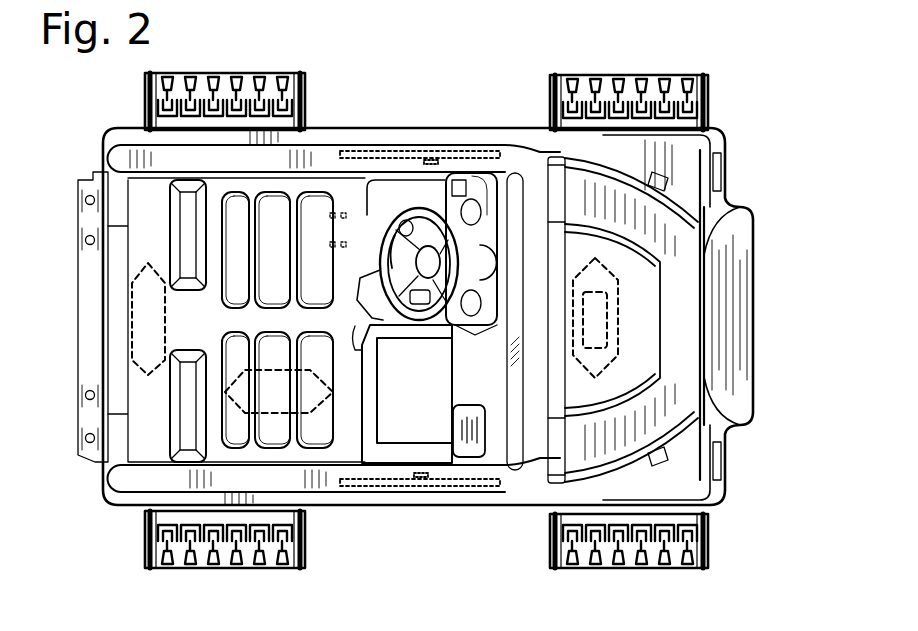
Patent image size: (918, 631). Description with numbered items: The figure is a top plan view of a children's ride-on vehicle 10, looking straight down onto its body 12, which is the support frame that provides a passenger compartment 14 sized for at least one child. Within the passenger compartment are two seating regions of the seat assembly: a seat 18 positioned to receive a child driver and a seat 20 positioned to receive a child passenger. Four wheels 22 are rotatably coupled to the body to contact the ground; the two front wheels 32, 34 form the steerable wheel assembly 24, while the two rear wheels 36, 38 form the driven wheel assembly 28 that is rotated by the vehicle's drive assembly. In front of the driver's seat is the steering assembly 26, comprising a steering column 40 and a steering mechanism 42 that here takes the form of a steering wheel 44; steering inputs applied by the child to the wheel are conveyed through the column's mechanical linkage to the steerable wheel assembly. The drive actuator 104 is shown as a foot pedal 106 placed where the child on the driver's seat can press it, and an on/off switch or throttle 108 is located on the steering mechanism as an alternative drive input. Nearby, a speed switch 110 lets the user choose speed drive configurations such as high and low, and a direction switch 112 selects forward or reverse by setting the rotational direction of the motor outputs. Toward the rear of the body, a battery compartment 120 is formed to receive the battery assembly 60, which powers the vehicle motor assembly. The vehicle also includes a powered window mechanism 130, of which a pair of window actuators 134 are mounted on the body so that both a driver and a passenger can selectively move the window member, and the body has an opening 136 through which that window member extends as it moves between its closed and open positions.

The children's ride-on vehicle 10 is at (801, 177).
The body 12 is at (758, 282).
The passenger compartment 14 is at (391, 146).
The seat 18 is at (188, 205).
The seat 20 is at (188, 392).
The wheels 22 is at (428, 328).
The steerable wheel assembly 24 is at (618, 77).
The steering assembly 26 is at (487, 281).
The driven wheel assembly 28 is at (259, 71).
The front wheel 32 is at (561, 78).
The front wheel 34 is at (576, 569).
The rear wheel 36 is at (173, 76).
The rear wheel 38 is at (196, 571).
The steering column 40 is at (479, 265).
The steering mechanism 42 is at (396, 318).
The steering wheel 44 is at (436, 336).
The battery assembly 60 is at (608, 304).
The drive actuator 104 is at (403, 237).
The foot pedal 106 is at (411, 277).
The on/off switch or throttle 108 is at (396, 226).
The speed switch 110 is at (456, 174).
The direction switch 112 is at (465, 173).
The battery compartment 120 is at (138, 372).
The powered window mechanism 130 is at (404, 146).
The window actuator 134 is at (421, 149).
The opening 136 is at (353, 149).